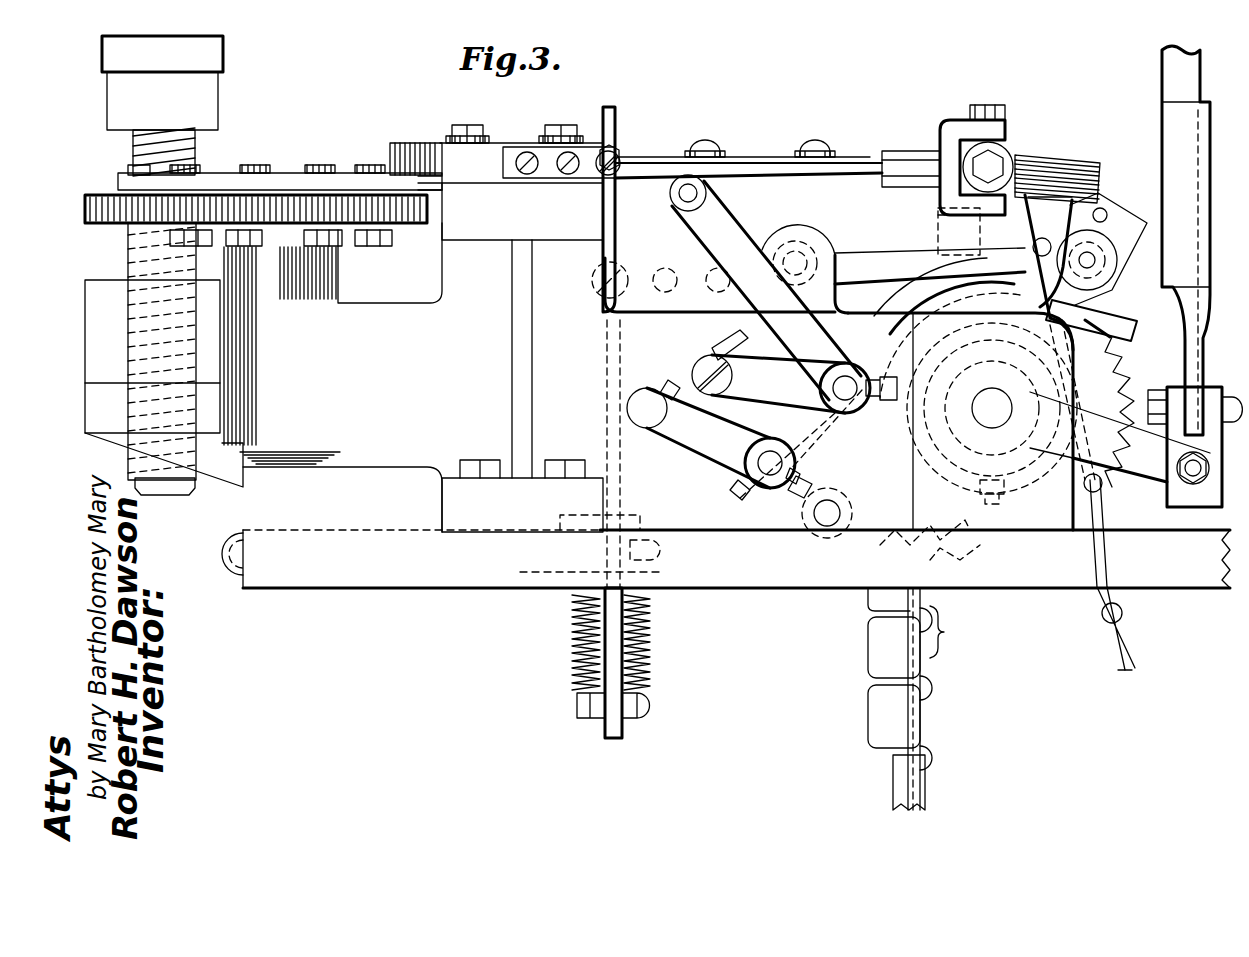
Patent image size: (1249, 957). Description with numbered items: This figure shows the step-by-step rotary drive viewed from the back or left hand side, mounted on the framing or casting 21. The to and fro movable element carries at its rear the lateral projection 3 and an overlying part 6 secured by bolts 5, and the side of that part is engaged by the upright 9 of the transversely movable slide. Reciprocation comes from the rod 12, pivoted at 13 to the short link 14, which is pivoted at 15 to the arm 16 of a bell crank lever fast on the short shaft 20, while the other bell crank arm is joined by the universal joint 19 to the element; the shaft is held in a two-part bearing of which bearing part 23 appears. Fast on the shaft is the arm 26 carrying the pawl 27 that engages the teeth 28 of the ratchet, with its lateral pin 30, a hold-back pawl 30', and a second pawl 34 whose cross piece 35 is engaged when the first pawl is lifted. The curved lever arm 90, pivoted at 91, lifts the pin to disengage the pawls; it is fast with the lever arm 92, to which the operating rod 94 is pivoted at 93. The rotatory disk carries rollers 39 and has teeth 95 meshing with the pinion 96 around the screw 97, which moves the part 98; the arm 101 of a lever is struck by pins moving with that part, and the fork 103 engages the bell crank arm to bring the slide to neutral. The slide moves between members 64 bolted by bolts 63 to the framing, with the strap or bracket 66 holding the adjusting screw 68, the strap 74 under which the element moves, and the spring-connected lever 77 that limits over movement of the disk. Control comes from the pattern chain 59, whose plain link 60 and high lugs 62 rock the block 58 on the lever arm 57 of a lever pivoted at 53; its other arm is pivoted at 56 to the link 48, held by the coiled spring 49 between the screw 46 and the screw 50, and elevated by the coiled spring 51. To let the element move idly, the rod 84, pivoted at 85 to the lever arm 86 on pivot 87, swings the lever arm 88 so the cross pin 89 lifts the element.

The lateral projection 3 is at (772, 160).
The bolts 5 is at (820, 135).
The overlying part 6 is at (740, 160).
The upright 9 is at (615, 112).
The link or rod 12 is at (1160, 133).
The pivot connection 13 is at (1160, 395).
The short link 14 is at (1167, 490).
The pivot 15 is at (1195, 480).
The arm of bell crank lever 16 is at (1148, 470).
The universal joint 19 is at (1005, 152).
The short shaft 20 is at (992, 412).
The framing or casting 21 is at (428, 450).
The bearing part 23 is at (1092, 340).
The arm or lever 26 is at (1130, 250).
The pawl 27 is at (1108, 265).
The ratchet teeth 28 is at (1124, 362).
The pin 30 is at (1060, 337).
The hold-back pawl 30' is at (930, 552).
The second pawl 34 is at (938, 230).
The cross piece 35 is at (938, 210).
The roller 39 is at (243, 165).
The screw 46 is at (662, 550).
The link 48 is at (605, 608).
The coiled spring 49 is at (650, 628).
The screw 50 is at (652, 705).
The coiled spring 51 is at (578, 645).
The pivot 53 is at (800, 258).
The pivotal connection 56 is at (592, 280).
The lever arm 57 is at (874, 240).
The block or lateral extension 58 is at (1048, 312).
The pattern chain 59 is at (950, 632).
The plain link 60 is at (1132, 642).
The high lugs 62 is at (855, 713).
The bolts 63 is at (565, 128).
The member 64 is at (505, 135).
The strap or bracket 66 is at (545, 155).
The adjusting screw 68 is at (618, 155).
The strap 74 is at (400, 143).
The lever 77 is at (338, 173).
The rod 84 is at (722, 345).
The pivotal connection 85 is at (700, 362).
The lever arm 86 is at (762, 360).
The pivot 87 is at (830, 360).
The lever arm 88 is at (745, 235).
The cross pin 89 is at (706, 193).
The curved lever arm 90 is at (1130, 318).
The pivot 91 is at (768, 470).
The lever arm 92 is at (700, 440).
The pivotal connection 93 is at (643, 392).
The operating rod 94 is at (672, 385).
The teeth 95 is at (266, 195).
The pinion 96 is at (96, 182).
The screw 97 is at (138, 137).
The part 98 is at (208, 102).
The arm 101 is at (222, 548).
The fork 103 is at (676, 572).